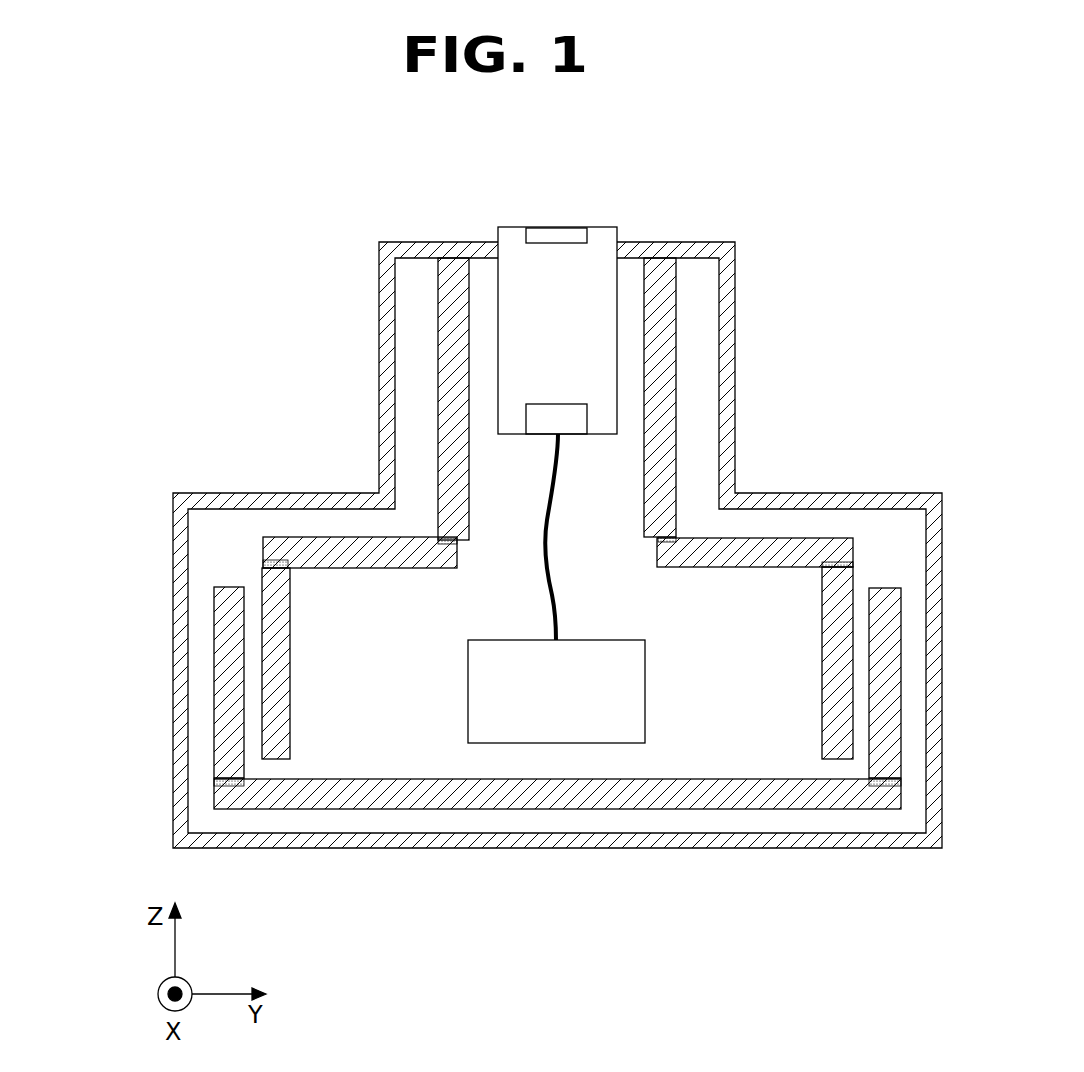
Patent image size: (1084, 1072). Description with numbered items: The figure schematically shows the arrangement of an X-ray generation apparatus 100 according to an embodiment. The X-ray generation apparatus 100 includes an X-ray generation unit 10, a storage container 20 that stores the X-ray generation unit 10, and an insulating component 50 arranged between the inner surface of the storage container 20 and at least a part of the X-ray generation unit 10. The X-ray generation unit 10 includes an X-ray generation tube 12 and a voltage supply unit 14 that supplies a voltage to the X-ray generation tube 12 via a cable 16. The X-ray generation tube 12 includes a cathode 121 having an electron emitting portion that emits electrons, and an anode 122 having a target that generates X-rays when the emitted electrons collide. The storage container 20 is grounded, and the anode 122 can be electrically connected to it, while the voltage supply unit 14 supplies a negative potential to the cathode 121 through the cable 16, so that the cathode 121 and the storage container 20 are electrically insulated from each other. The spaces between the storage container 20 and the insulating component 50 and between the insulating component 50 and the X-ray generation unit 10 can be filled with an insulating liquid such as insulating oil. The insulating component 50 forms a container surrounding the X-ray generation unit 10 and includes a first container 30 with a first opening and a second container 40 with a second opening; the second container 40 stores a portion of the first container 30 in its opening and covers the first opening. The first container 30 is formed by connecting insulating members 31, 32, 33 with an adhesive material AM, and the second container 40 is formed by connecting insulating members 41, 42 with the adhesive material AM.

The X-ray generation apparatus 100 is at (823, 208).
The X-ray generation unit 10 is at (542, 212).
The X-ray generation tube 12 is at (607, 226).
The cathode 121 is at (574, 403).
The anode 122 is at (559, 245).
The voltage supply unit 14 is at (647, 683).
The cable 16 is at (550, 537).
The storage container 20 is at (860, 492).
The first container 30 is at (256, 371).
The insulating member 31 is at (287, 547).
The insulating member 32 is at (450, 500).
The insulating member 33 is at (261, 586).
The second container 40 is at (103, 755).
The insulating member 41 is at (213, 793).
The insulating member 42 is at (213, 755).
The insulating component 50 is at (890, 867).
The adhesive material AM is at (457, 542).